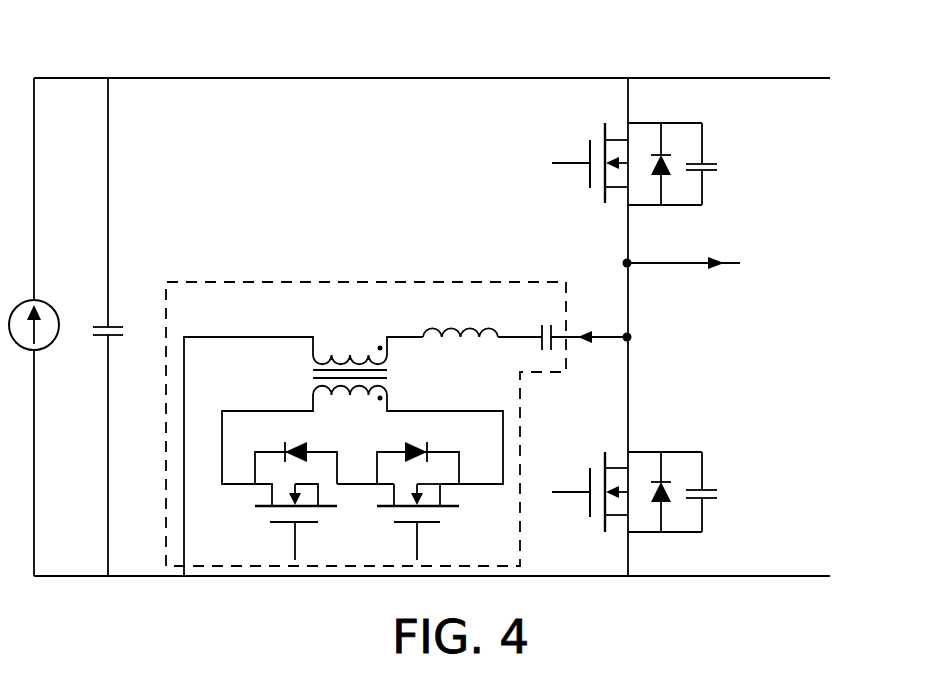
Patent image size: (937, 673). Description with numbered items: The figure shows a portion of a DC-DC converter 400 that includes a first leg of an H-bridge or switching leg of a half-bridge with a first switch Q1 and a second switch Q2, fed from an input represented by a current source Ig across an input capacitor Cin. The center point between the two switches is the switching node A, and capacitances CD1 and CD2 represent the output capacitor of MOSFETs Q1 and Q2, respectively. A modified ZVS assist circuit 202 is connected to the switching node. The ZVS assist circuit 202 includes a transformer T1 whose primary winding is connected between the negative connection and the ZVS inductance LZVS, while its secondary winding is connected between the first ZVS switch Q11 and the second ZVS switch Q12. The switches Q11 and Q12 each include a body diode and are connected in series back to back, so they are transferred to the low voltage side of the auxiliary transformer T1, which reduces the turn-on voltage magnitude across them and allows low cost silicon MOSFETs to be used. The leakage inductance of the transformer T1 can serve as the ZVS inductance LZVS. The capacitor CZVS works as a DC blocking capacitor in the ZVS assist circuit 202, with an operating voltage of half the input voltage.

The DC-DC converter 400 is at (108, 62).
The ZVS assist circuit 202 is at (396, 405).
The first switch Q1 is at (624, 161).
The second switch Q2 is at (624, 487).
The capacitance CD1 is at (712, 164).
The capacitance CD2 is at (713, 492).
The input capacitor Cin is at (121, 350).
The input current source Ig is at (40, 311).
The transformer T1 is at (362, 352).
The ZVS inductance LZVS is at (460, 319).
The capacitor CZVS is at (542, 326).
The first ZVS switch Q11 is at (282, 501).
The second ZVS switch Q12 is at (408, 501).